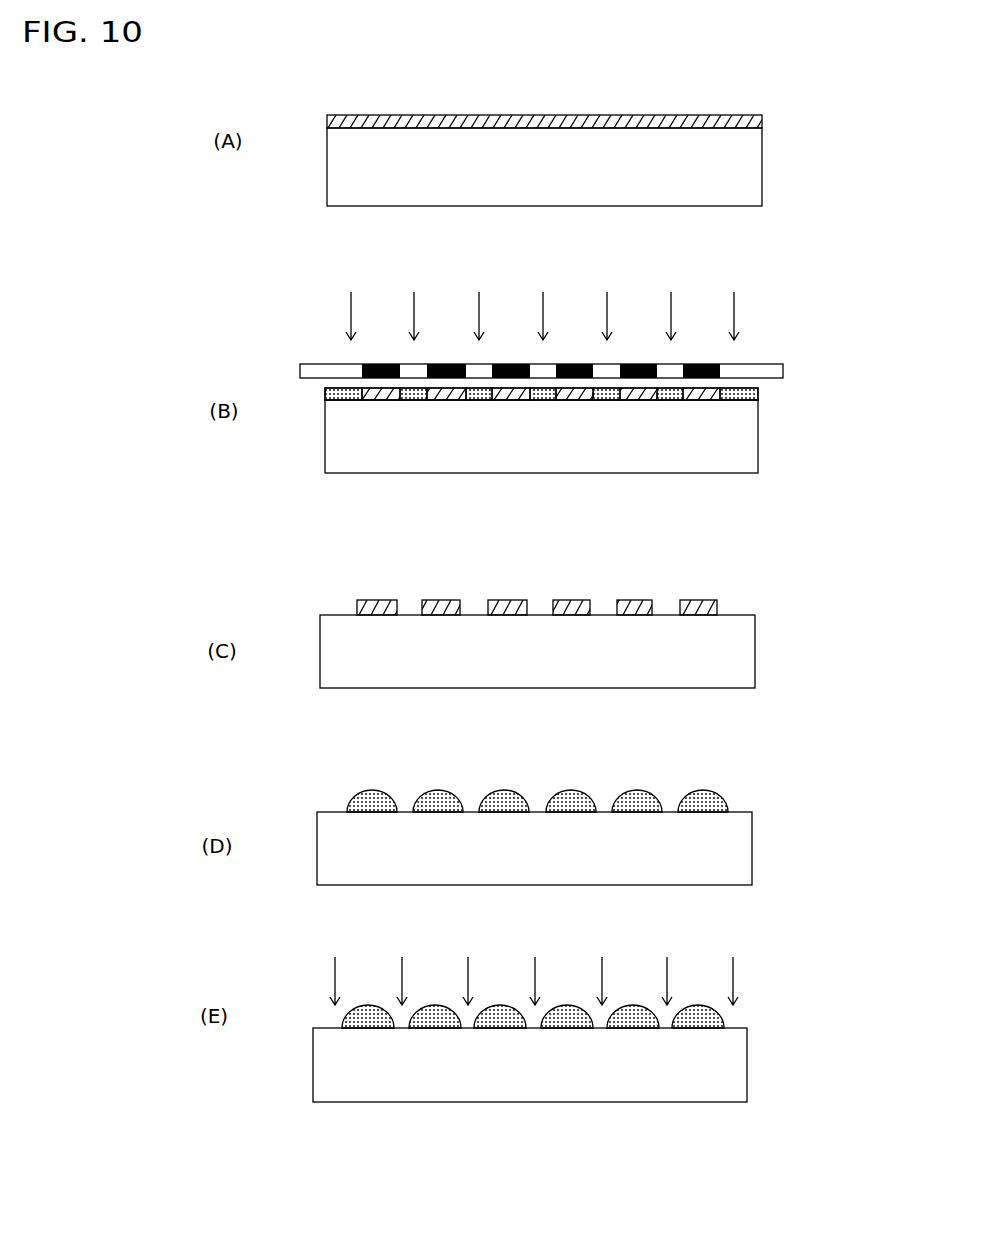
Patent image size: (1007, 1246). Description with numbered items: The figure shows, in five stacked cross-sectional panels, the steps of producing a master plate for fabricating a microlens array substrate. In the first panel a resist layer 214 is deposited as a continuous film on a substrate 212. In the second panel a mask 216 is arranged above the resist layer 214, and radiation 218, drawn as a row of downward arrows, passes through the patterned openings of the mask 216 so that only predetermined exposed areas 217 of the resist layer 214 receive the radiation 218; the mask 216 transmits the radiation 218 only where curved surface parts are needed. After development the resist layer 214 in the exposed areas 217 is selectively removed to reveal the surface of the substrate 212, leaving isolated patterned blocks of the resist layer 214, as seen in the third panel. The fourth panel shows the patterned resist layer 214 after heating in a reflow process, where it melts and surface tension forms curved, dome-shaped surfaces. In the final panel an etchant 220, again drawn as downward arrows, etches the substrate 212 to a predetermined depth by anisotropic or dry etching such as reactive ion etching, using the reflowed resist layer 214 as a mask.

The substrate 212 is at (755, 172).
The resist layer 214 is at (762, 122).
The mask 216 is at (783, 372).
The exposed areas 217 is at (758, 397).
The radiation 218 is at (734, 308).
The etchant 220 is at (733, 967).